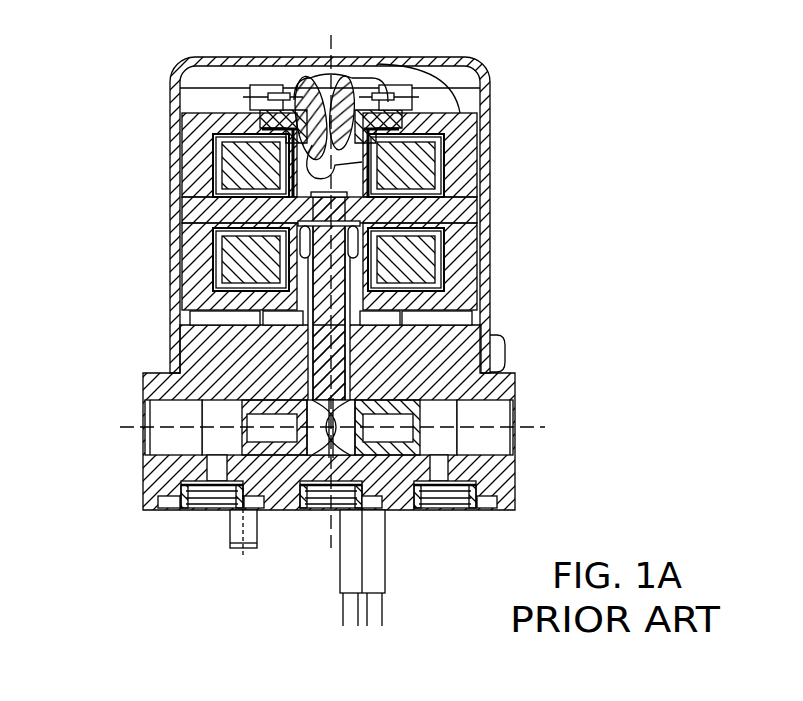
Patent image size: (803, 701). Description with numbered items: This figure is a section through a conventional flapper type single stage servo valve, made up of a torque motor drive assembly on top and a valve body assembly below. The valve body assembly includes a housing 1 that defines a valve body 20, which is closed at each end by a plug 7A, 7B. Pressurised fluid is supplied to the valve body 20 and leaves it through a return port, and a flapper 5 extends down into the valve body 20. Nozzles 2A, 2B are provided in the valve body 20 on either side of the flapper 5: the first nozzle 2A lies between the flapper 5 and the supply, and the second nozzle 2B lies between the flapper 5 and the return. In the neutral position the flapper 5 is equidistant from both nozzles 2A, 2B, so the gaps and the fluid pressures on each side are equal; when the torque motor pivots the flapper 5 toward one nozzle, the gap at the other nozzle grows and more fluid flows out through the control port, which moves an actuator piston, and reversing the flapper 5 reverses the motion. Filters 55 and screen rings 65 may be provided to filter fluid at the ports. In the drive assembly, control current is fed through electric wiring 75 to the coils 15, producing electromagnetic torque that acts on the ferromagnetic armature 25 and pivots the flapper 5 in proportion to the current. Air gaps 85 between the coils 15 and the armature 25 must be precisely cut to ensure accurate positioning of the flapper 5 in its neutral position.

The housing 1 is at (185, 360).
The first nozzle 2A is at (142, 408).
The second nozzle 2B is at (515, 397).
The flapper 5 is at (397, 358).
The plug 7A is at (160, 443).
The plug 7B is at (518, 437).
The coils 15 is at (243, 173).
The valve body 20 is at (502, 352).
The ferromagnetic armature 25 is at (462, 207).
The filters 55 is at (195, 479).
The screen rings 65 is at (173, 500).
The electric wiring 75 is at (308, 90).
The air gaps 85 is at (190, 228).